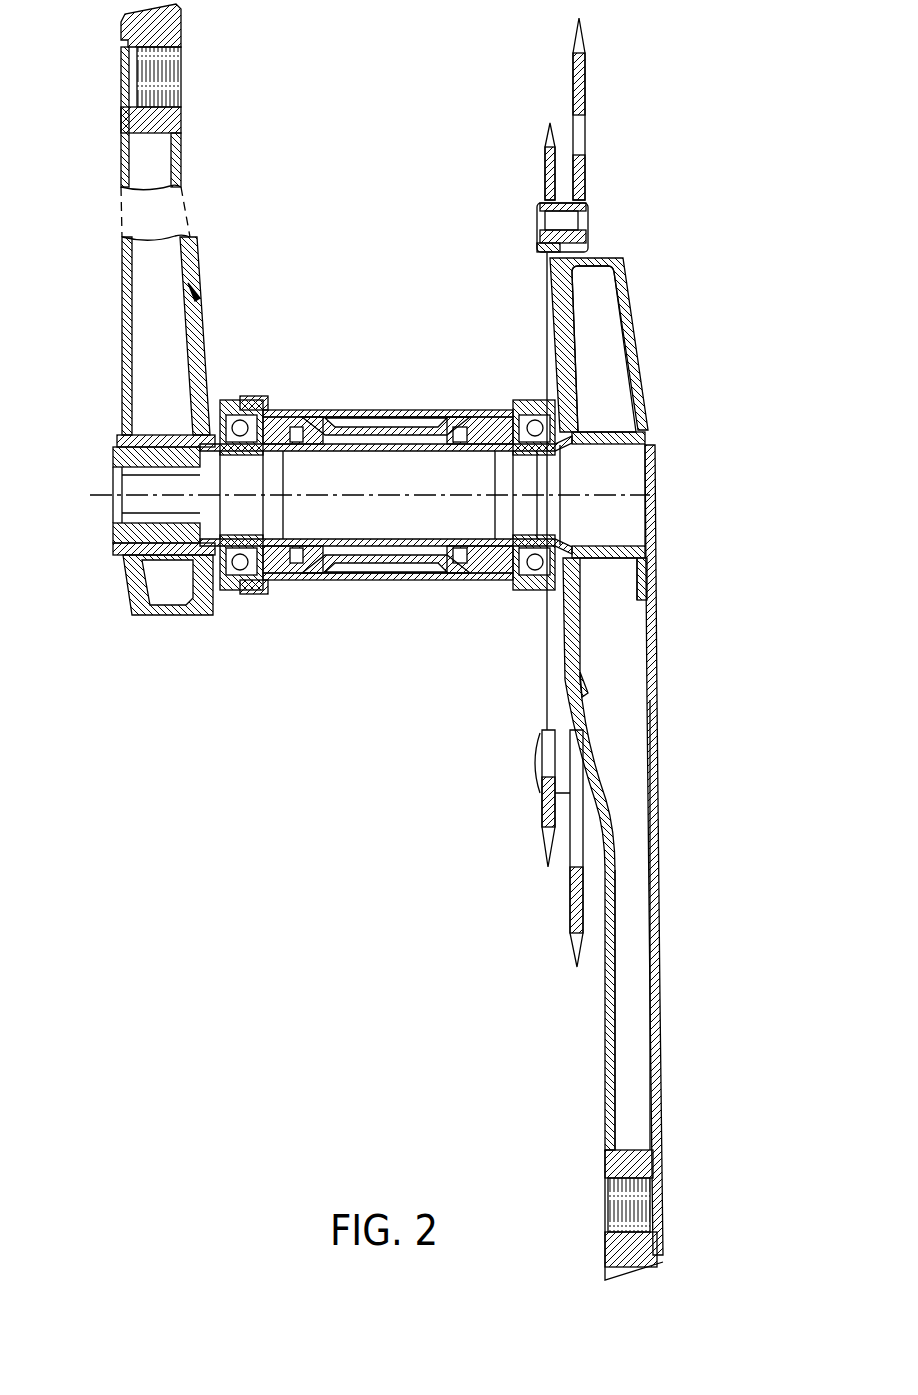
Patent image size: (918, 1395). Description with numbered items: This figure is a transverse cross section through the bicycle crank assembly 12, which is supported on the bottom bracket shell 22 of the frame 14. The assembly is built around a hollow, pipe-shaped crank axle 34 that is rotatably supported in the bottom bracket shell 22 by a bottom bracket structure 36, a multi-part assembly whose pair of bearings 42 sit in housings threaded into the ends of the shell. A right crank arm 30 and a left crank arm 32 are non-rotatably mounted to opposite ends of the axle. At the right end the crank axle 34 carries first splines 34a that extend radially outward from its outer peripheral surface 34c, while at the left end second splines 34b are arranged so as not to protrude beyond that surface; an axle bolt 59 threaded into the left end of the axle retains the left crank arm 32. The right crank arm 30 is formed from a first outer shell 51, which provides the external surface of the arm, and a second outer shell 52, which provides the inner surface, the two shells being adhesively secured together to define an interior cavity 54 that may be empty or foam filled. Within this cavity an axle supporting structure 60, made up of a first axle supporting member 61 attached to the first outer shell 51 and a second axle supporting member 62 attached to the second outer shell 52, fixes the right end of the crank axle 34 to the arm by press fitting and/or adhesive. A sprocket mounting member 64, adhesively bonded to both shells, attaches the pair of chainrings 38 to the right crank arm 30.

The bicycle crank assembly 12 is at (686, 122).
The frame 14 is at (386, 490).
The bottom bracket shell 22 is at (392, 580).
The right crank arm 30 is at (622, 769).
The left crank arm 32 is at (145, 344).
The crank axle 34 is at (452, 465).
The first splines 34a is at (625, 540).
The second splines 34b is at (142, 583).
The outer peripheral surface 34c is at (410, 548).
The bottom bracket structure 36 is at (358, 413).
The chainrings 38 is at (545, 177).
The bearings 42 is at (232, 400).
The first outer shell 51 is at (669, 1000).
The second outer shell 52 is at (604, 1013).
The interior cavity 54 is at (612, 663).
The axle bolt 59 is at (115, 452).
The axle supporting structure 60 is at (608, 566).
The first axle supporting member 61 is at (625, 432).
The second axle supporting member 62 is at (614, 345).
The sprocket mounting member 64 is at (596, 333).